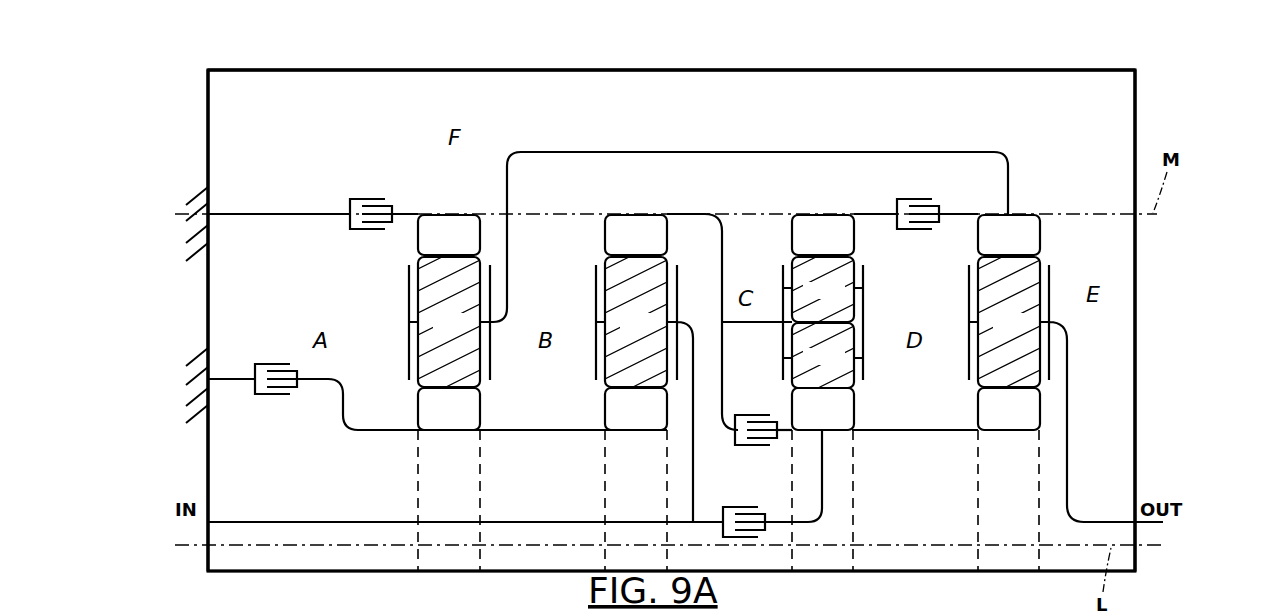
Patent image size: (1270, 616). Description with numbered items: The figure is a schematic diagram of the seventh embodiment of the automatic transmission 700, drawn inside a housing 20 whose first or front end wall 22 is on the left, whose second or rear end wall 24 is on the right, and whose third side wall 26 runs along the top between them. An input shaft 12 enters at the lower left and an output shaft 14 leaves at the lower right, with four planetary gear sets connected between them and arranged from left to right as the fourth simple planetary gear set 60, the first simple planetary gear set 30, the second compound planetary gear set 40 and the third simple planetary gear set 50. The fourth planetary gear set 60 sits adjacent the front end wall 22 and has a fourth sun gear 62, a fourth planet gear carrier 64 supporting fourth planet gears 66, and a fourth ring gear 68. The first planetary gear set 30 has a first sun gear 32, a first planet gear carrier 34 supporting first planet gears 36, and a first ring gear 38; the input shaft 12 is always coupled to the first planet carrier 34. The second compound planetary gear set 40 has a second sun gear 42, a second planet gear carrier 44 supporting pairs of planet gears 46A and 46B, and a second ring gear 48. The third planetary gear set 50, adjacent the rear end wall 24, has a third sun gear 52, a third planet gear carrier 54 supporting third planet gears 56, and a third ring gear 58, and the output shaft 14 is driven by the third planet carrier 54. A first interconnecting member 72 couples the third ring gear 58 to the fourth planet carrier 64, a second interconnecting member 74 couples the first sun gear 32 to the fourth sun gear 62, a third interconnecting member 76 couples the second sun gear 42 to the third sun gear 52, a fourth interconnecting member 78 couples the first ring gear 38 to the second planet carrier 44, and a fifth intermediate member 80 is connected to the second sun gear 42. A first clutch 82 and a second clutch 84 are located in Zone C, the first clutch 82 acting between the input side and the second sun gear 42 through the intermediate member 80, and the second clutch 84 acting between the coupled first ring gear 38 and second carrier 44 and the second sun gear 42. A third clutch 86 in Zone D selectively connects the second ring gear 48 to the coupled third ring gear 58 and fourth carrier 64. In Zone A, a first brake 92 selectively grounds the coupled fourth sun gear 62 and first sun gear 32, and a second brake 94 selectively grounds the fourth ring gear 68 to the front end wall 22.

The input shaft 12 is at (195, 525).
The output shaft 14 is at (1158, 525).
The housing 20 is at (719, 57).
The first or front end wall 22 is at (207, 283).
The second or rear end wall 24 is at (1138, 338).
The third side wall 26 is at (680, 69).
The first simple planetary gear set 30 is at (579, 403).
The first sun gear 32 is at (636, 409).
The first planet gear carrier 34 is at (678, 277).
The first plurality of pinion or planet gears 36 is at (636, 330).
The first ring gear 38 is at (636, 235).
The second compound planetary gear set 40 is at (876, 403).
The second sun gear 42 is at (823, 409).
The second planet gear carrier 44 is at (778, 277).
The second plurality of pairs of pinion or planet gears 46A is at (823, 297).
The second plurality of pairs of pinion or planet gears 46B is at (823, 363).
The second ring gear 48 is at (823, 235).
The third simple planetary gear set 50 is at (1092, 390).
The third sun gear 52 is at (1009, 409).
The third planet gear carrier 54 is at (1055, 272).
The third plurality of pinion or planet gears 56 is at (1009, 330).
The third ring gear 58 is at (1009, 235).
The fourth simple planetary gear set 60 is at (390, 403).
The fourth sun gear 62 is at (449, 409).
The fourth planet gear carrier 64 is at (490, 358).
The fourth plurality of pinion or planet gears 66 is at (449, 330).
The fourth ring gear 68 is at (449, 235).
The first shaft, quill or interconnecting member 72 is at (768, 150).
The second shaft, quill or interconnecting member 74 is at (507, 433).
The third shaft, quill or interconnecting member 76 is at (965, 433).
The fourth shaft, quill or interconnecting member 78 is at (726, 240).
The fifth shaft, quill or intermediate member 80 is at (823, 465).
The first clutch 82 is at (751, 540).
The second clutch 84 is at (751, 447).
The third clutch 86 is at (914, 200).
The first brake 92 is at (272, 394).
The second brake 94 is at (356, 231).
The seventh embodiment automatic transmission 700 is at (1195, 101).